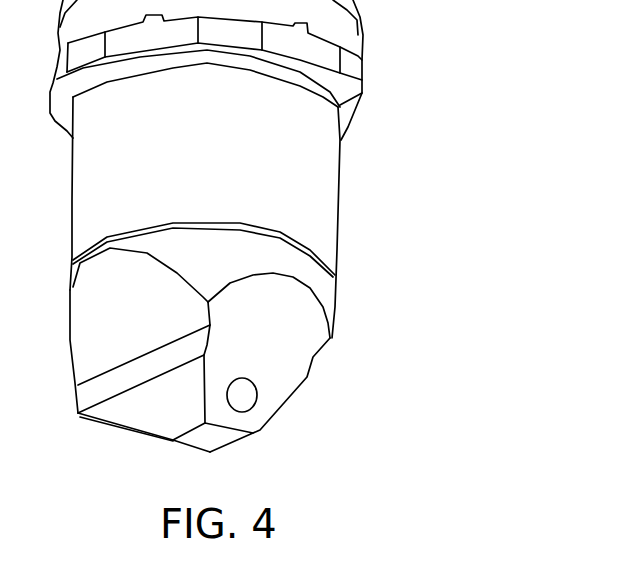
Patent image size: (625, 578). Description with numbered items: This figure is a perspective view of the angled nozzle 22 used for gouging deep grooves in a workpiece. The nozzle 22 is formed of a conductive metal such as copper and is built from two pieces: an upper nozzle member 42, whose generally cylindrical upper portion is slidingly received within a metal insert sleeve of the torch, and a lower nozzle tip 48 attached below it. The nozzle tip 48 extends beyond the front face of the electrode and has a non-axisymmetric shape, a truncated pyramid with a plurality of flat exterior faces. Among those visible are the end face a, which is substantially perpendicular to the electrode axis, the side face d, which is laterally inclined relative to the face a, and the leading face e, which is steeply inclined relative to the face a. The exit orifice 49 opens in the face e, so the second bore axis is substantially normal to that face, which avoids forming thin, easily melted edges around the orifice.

The nozzle 22 is at (375, 117).
The upper nozzle member 42 is at (300, 203).
The lower nozzle tip 48 is at (330, 305).
The exit orifice 49 is at (245, 393).
The side face d is at (169, 416).
The leading face e is at (269, 344).
The end face a is at (215, 440).